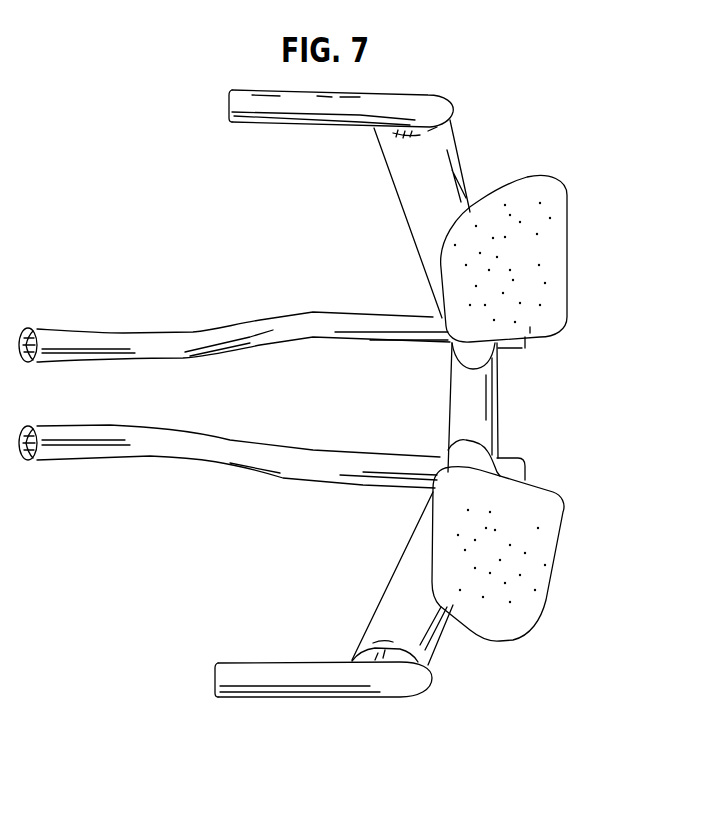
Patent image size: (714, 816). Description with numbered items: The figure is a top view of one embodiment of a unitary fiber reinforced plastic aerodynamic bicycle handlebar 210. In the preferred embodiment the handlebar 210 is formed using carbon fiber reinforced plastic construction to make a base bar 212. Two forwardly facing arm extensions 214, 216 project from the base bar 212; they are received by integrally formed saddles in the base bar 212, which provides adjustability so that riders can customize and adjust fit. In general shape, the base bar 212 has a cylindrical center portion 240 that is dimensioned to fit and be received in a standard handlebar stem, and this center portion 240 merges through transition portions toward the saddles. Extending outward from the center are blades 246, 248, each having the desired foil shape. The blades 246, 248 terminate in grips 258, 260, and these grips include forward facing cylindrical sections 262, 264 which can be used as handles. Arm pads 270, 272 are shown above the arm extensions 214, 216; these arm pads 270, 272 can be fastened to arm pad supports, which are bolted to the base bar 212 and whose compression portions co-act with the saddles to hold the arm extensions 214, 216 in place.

The handlebar 210 is at (467, 183).
The base bar 212 is at (447, 627).
The arm extension 214 is at (232, 468).
The arm extension 216 is at (213, 330).
The cylindrical center portion 240 is at (500, 398).
The blade 246 is at (378, 616).
The blade 248 is at (453, 152).
The grip 258 is at (207, 675).
The grip 260 is at (223, 112).
The forward facing cylindrical section 262 is at (312, 665).
The forward facing cylindrical section 264 is at (325, 127).
The arm pad 270 is at (540, 548).
The arm pad 272 is at (560, 249).